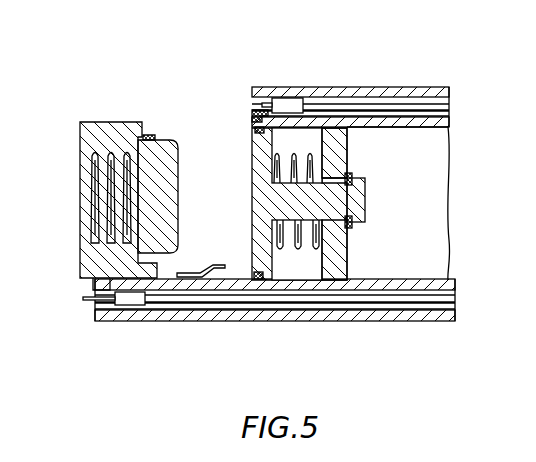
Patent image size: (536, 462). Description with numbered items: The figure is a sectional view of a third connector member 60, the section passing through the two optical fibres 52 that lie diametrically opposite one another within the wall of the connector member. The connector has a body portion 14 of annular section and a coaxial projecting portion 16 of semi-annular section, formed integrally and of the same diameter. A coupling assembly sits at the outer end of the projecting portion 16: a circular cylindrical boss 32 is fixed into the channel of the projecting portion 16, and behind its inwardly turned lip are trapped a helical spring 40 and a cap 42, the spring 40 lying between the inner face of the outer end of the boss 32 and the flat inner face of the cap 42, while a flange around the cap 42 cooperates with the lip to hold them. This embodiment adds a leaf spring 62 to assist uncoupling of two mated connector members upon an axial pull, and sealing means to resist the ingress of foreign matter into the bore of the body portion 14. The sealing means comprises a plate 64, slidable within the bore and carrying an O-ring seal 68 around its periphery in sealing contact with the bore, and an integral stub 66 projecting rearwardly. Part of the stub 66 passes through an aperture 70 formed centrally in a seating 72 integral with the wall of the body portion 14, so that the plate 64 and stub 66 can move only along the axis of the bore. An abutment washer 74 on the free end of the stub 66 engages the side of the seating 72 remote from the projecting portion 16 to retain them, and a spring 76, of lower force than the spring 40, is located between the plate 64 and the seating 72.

The body portion 14 is at (383, 87).
The projecting portion 16 is at (186, 322).
The boss 32 is at (120, 122).
The helical spring 40 is at (104, 193).
The cap 42 is at (168, 166).
The optical fibres 52 is at (289, 100).
The third connector member 60 is at (326, 332).
The leaf spring 62 is at (212, 266).
The plate 64 is at (258, 162).
The stub 66 is at (366, 211).
The O-ring seal 68 is at (252, 125).
The aperture 70 is at (348, 224).
The seating 72 is at (343, 143).
The abutment washer 74 is at (353, 222).
The spring 76 is at (293, 153).